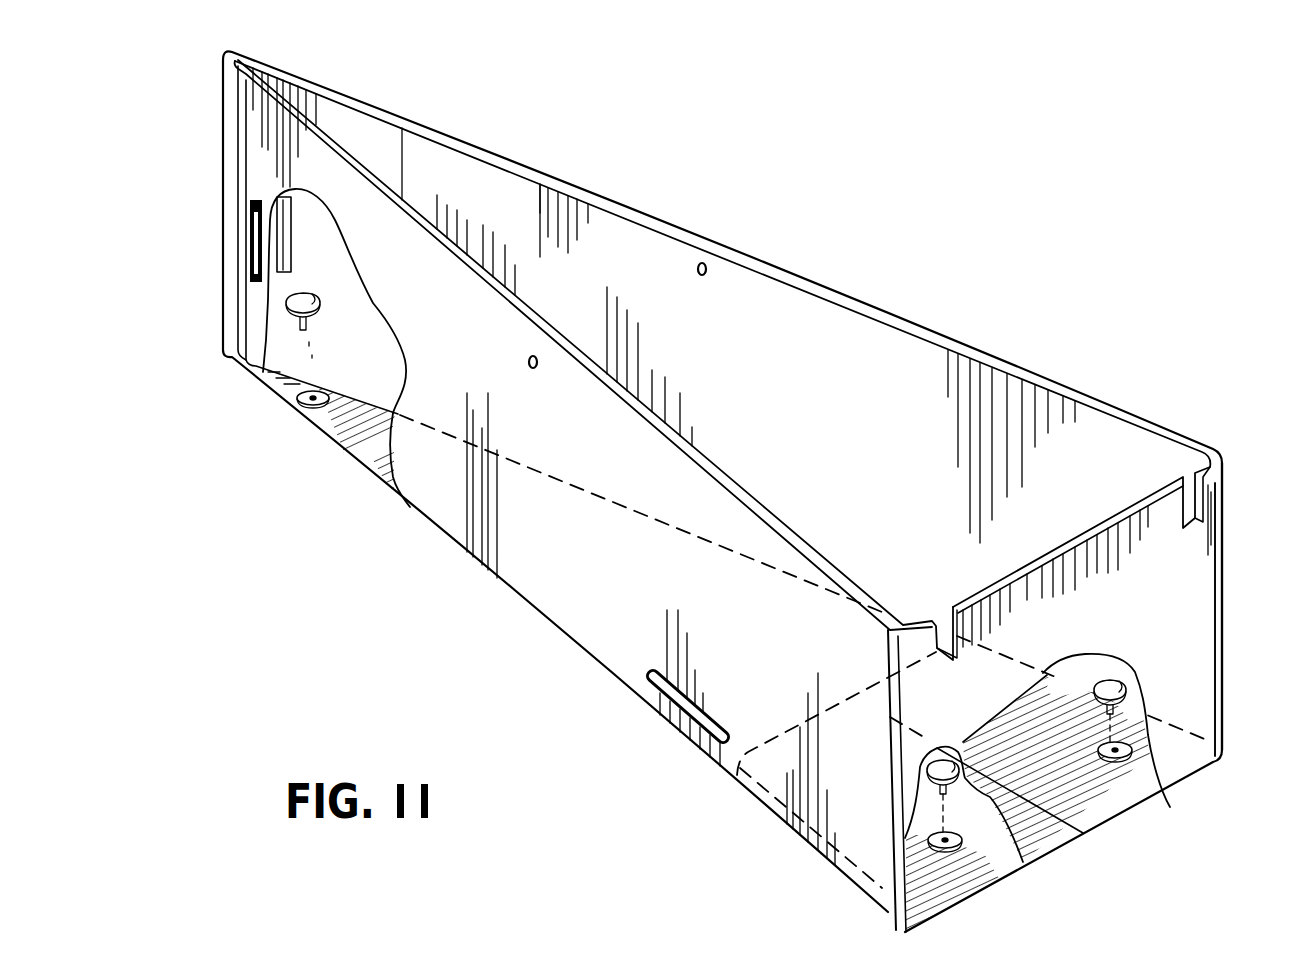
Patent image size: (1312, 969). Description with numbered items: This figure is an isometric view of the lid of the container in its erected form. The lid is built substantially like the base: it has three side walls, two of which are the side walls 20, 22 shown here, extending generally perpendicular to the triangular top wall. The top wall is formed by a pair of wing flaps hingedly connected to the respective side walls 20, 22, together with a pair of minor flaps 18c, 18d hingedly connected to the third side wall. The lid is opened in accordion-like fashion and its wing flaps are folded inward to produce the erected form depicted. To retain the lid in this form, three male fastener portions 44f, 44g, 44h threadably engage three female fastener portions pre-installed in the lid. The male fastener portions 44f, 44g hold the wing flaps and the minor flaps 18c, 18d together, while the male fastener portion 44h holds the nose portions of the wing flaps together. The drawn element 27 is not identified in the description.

The side wall 20 is at (814, 303).
The side wall 22 is at (543, 590).
The end wall 27 is at (1213, 655).
The male fastener portion 44h is at (318, 308).
The male fastener portion 44g is at (1023, 860).
The male fastener portion 44f is at (1154, 793).
The minor flap 18c is at (1007, 861).
The minor flap 18d is at (1142, 792).